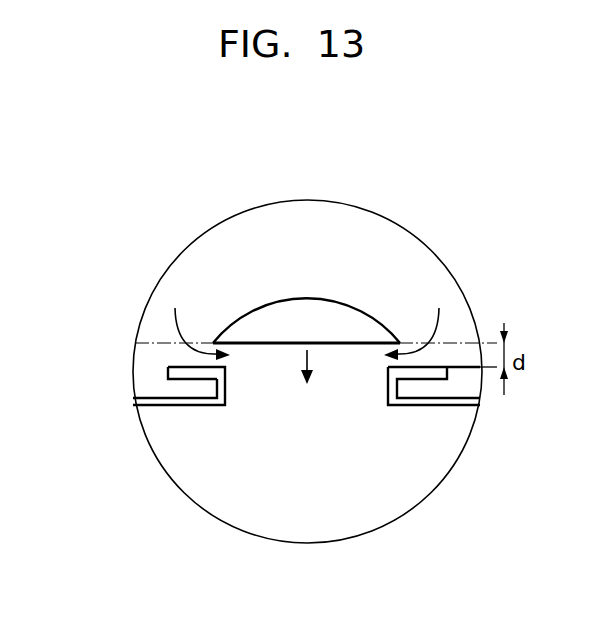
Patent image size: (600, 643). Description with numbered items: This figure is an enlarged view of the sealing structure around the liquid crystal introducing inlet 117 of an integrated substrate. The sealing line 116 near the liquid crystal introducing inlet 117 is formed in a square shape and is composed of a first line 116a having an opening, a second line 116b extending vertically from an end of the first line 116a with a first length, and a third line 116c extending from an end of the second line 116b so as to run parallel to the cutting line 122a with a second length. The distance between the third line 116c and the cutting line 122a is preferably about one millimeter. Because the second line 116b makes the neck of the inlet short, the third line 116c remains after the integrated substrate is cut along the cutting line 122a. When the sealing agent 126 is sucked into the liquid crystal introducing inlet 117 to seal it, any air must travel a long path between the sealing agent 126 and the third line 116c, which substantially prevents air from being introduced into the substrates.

The sealing line 116 is at (444, 407).
The first line 116a is at (180, 405).
The second line 116b is at (226, 390).
The third line 116c is at (185, 379).
The liquid crystal introducing inlet 117 is at (265, 350).
The cutting line 122a is at (167, 343).
The sealing agent 126 is at (312, 300).